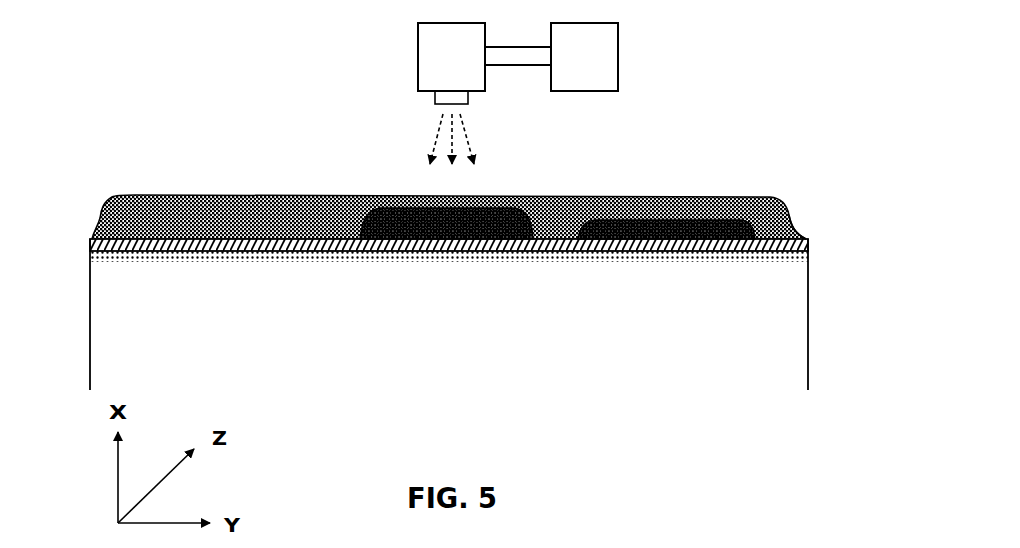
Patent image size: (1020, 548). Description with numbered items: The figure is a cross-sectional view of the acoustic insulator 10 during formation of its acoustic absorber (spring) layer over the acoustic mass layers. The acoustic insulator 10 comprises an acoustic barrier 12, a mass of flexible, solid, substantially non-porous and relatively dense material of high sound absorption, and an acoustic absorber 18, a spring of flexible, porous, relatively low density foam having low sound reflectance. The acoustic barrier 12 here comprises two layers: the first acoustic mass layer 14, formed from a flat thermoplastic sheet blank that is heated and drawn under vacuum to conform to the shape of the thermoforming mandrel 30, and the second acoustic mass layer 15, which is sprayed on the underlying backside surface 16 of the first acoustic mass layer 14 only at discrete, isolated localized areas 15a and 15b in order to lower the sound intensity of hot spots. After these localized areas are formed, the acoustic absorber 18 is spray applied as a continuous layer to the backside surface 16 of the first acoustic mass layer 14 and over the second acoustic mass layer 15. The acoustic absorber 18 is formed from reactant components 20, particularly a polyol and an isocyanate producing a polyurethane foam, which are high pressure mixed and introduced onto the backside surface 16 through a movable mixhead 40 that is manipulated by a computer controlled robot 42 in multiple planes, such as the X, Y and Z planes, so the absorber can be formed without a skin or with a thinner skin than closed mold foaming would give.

The acoustic insulator 10 is at (148, 112).
The acoustic barrier 12 is at (646, 267).
The first acoustic mass layer 14 is at (808, 245).
The second acoustic mass layer 15 is at (346, 196).
The discrete localized area 15a is at (475, 228).
The discrete localized area 15b is at (645, 227).
The backside surface 16 is at (802, 238).
The acoustic absorber 18 is at (755, 178).
The reactant components 20 is at (423, 139).
The thermoforming mandrel 30 is at (165, 317).
The movable mixhead 40 is at (465, 67).
The computer controlled robot 42 is at (599, 67).